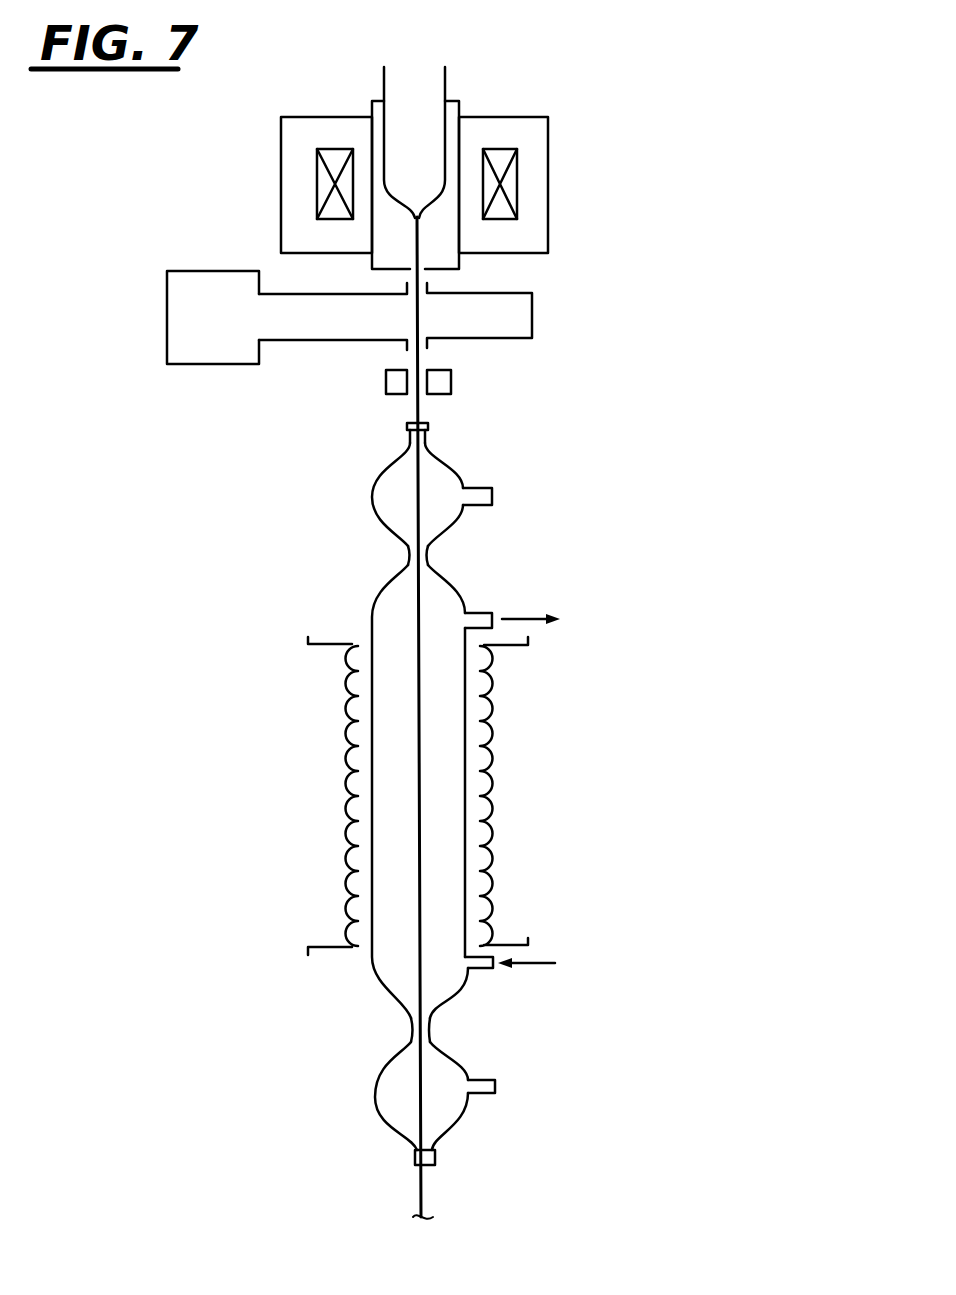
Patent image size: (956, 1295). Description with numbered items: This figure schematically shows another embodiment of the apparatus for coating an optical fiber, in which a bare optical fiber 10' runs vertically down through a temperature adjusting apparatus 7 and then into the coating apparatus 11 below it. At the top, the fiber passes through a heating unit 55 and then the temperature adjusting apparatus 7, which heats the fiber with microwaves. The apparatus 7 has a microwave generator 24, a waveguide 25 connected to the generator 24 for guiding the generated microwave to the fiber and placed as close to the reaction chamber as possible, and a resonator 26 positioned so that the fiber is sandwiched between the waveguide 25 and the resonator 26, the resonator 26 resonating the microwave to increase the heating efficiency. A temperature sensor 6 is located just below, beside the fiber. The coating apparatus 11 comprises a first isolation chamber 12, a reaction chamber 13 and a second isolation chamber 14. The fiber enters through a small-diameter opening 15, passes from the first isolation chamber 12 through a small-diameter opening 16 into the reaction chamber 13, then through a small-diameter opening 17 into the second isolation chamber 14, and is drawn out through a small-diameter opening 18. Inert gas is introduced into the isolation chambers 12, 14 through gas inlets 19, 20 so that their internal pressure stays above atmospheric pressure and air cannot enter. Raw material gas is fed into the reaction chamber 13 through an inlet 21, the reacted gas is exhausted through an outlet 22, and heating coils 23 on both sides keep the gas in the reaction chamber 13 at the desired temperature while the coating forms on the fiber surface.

The optical fiber 10' is at (444, 643).
The induction heating coil assembly 55 is at (549, 160).
The temperature adjusting apparatus 7 is at (393, 317).
The microwave generator 24 is at (215, 353).
The waveguide 25 is at (288, 294).
The resonator 26 is at (510, 300).
The temperature sensor 6 is at (386, 382).
The coating apparatus 11 is at (452, 798).
The small-diameter opening 15 is at (408, 434).
The first isolation chamber 12 is at (378, 488).
The gas inlet 19 is at (473, 488).
The small-diameter opening 16 is at (410, 562).
The reaction chamber 13 is at (385, 865).
The outlet 22 is at (473, 612).
The inlet 21 is at (475, 972).
The heating coil 23 is at (333, 648).
The small-diameter opening 17 is at (410, 1027).
The second isolation chamber 14 is at (385, 1098).
The gas inlet 20 is at (473, 1097).
The small-diameter opening 18 is at (415, 1154).